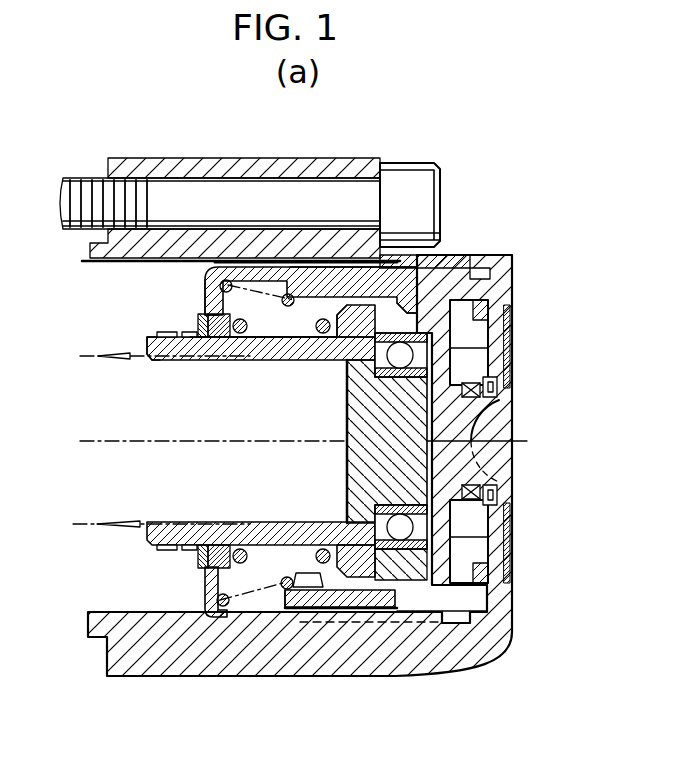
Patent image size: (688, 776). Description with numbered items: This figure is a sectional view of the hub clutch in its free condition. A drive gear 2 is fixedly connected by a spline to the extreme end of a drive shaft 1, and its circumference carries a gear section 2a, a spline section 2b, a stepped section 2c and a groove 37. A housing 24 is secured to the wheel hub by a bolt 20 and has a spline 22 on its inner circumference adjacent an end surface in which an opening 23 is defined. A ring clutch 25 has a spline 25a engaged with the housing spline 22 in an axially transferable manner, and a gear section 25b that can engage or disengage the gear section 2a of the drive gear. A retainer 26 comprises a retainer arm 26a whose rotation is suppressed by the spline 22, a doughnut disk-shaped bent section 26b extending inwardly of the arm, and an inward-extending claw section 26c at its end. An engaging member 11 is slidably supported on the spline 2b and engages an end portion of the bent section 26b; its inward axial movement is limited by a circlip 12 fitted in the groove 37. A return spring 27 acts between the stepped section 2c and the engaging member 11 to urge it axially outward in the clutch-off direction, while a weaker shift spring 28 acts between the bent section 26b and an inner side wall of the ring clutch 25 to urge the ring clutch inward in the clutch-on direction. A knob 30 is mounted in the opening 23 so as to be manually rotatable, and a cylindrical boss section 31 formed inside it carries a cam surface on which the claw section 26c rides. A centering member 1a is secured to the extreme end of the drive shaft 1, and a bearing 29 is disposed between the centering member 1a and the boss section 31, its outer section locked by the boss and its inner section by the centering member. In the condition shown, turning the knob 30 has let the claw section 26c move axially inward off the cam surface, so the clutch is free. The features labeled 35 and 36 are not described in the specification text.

The drive shaft 1 is at (110, 457).
The centering member 1a is at (360, 460).
The drive gear 2 is at (277, 350).
The gear section 2a is at (357, 310).
The spline section 2b is at (254, 340).
The stepped section 2c is at (330, 310).
The engaging member 11 is at (212, 338).
The circlip 12 is at (208, 317).
The bolt 20 is at (420, 192).
The spline 22 is at (432, 273).
The opening 23 is at (480, 395).
The housing 24 is at (503, 268).
The ring clutch 25 is at (366, 262).
The spline 25a is at (287, 613).
The gear section 25b is at (290, 305).
The retainer 26 is at (262, 265).
The retainer arm 26a is at (318, 267).
The bent section 26b is at (206, 282).
The claw section 26c is at (413, 333).
The return spring 27 is at (318, 334).
The shift spring 28 is at (231, 282).
The bearing 29 is at (462, 360).
The knob 30 is at (475, 422).
The boss section 31 is at (507, 303).
The shaft end portion 35 is at (160, 333).
The serrations 36 is at (180, 332).
The groove 37 is at (200, 346).